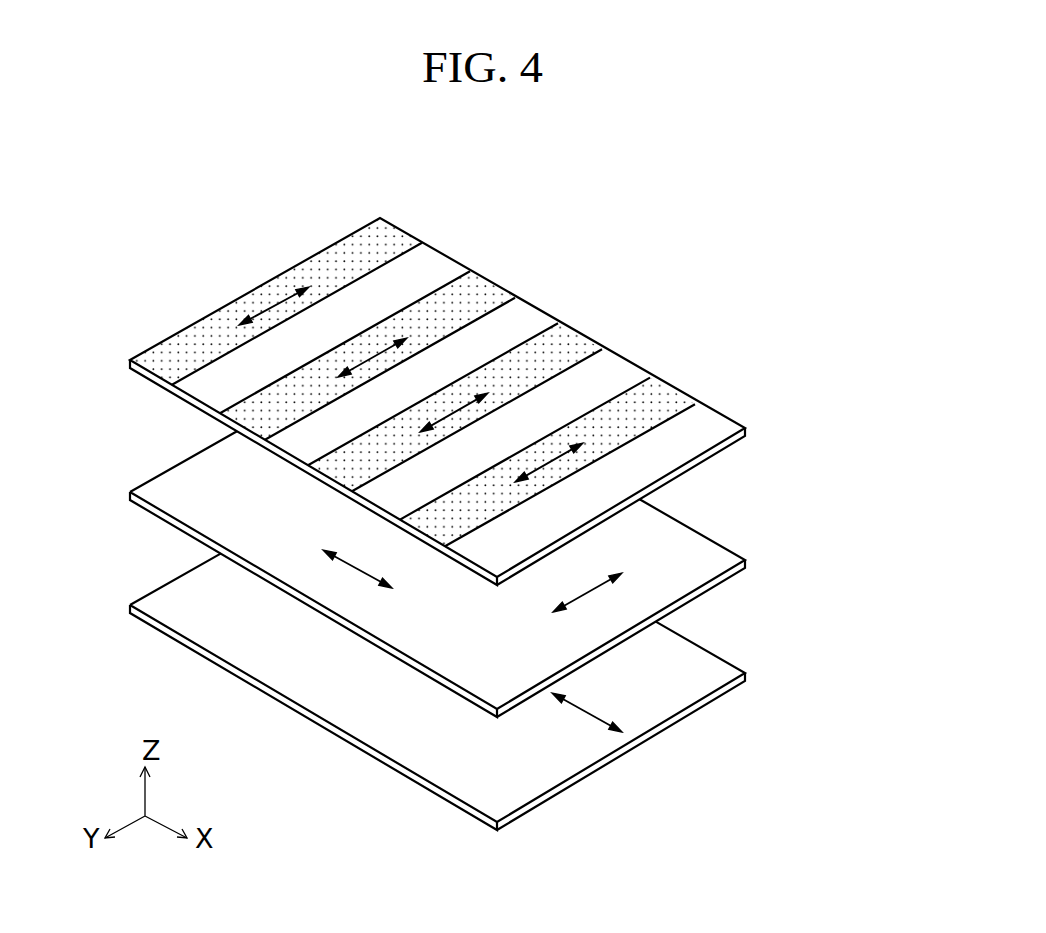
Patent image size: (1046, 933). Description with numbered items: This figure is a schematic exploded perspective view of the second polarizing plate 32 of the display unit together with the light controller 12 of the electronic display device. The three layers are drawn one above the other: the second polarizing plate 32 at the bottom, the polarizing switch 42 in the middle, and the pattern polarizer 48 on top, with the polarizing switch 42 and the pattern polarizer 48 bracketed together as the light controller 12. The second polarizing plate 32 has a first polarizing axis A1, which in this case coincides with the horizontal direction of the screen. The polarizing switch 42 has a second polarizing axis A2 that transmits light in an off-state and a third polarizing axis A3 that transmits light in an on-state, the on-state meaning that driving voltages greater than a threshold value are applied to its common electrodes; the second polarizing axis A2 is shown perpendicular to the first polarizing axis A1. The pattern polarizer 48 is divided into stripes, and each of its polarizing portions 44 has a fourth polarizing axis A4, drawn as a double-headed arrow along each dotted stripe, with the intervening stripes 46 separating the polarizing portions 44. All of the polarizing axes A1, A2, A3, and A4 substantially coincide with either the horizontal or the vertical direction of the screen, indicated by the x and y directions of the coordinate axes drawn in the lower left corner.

The light controller 12 is at (503, 497).
The second polarizing plate 32 is at (448, 692).
The polarizing switch 42 is at (472, 604).
The polarizing portions 44 is at (578, 332).
The plain stripe region 46 is at (535, 308).
The pattern polarizer 48 is at (472, 401).
The first polarizing axis A1 is at (592, 716).
The second polarizing axis A2 is at (598, 590).
The third polarizing axis A3 is at (357, 570).
The fourth polarizing axis A4 is at (272, 303).